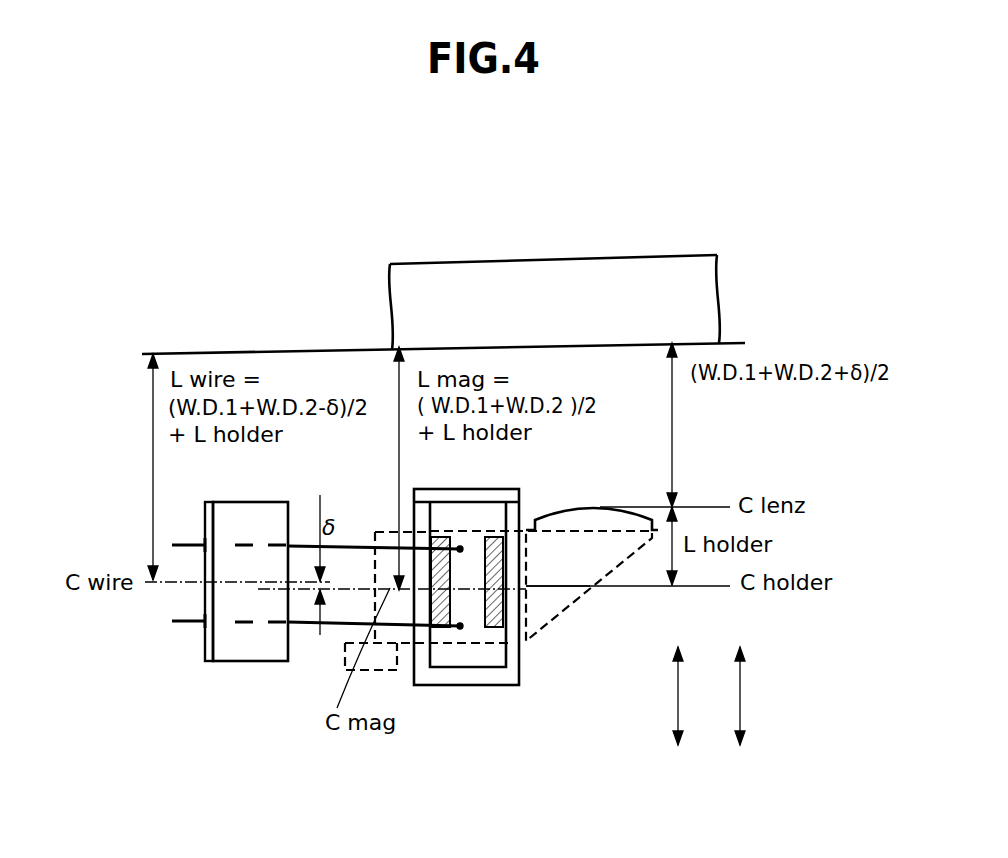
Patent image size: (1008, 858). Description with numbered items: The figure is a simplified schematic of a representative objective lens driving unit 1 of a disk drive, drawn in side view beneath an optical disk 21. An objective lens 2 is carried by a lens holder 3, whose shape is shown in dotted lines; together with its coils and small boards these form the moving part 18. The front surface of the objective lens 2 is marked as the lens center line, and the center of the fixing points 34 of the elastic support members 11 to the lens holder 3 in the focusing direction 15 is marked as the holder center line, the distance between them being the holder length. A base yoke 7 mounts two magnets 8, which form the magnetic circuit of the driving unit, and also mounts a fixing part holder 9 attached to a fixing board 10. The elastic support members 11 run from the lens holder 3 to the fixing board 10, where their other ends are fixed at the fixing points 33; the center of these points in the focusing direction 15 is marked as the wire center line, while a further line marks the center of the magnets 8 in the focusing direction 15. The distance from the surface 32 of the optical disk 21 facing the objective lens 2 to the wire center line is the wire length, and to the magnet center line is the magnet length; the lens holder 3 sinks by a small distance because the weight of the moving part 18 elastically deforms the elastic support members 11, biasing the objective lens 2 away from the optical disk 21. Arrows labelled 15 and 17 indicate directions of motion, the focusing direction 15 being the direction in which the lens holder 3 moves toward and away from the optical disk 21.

The objective lens driving unit 1 is at (505, 824).
The objective lens 2 is at (563, 518).
The lens holder 3 is at (582, 593).
The base yoke 7 is at (510, 660).
The magnets 8 is at (440, 538).
The fixing part holder 9 is at (255, 515).
The fixing board 10 is at (208, 520).
The elastic support members 11 is at (177, 545).
The focusing direction 15 is at (693, 696).
The tracking direction 17 is at (755, 696).
The moving part 18 is at (540, 605).
The optical disk 21 is at (402, 308).
The surface of the optical disk 32 is at (742, 343).
The fixing points on the fixing board 33 is at (203, 548).
The fixing points to the lens holder 34 is at (462, 552).